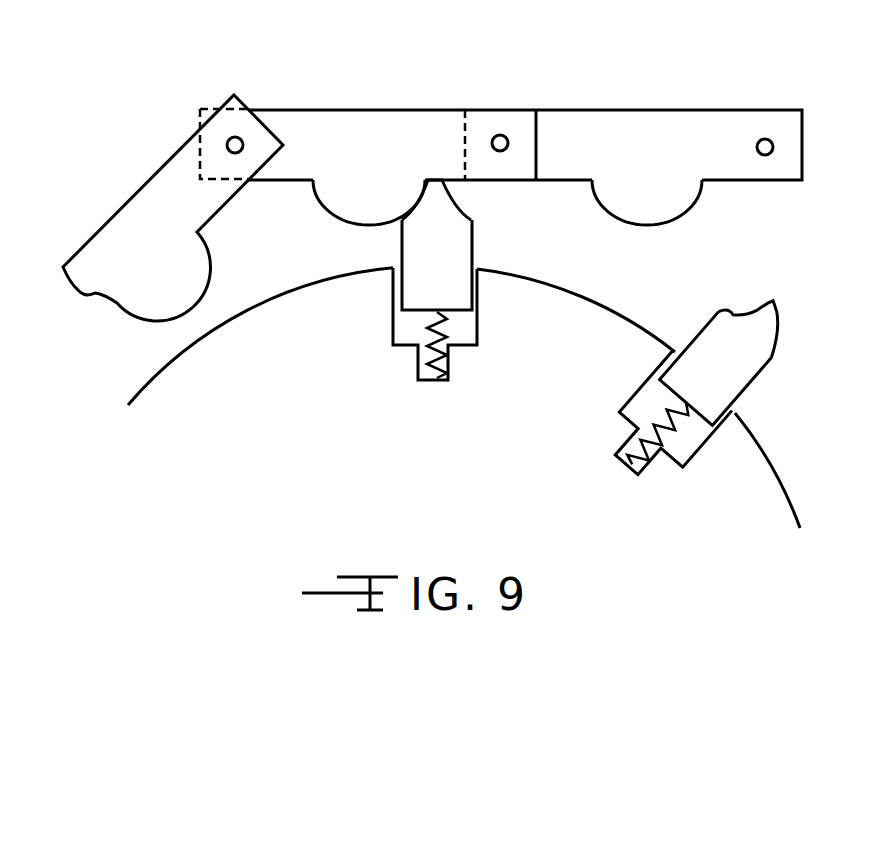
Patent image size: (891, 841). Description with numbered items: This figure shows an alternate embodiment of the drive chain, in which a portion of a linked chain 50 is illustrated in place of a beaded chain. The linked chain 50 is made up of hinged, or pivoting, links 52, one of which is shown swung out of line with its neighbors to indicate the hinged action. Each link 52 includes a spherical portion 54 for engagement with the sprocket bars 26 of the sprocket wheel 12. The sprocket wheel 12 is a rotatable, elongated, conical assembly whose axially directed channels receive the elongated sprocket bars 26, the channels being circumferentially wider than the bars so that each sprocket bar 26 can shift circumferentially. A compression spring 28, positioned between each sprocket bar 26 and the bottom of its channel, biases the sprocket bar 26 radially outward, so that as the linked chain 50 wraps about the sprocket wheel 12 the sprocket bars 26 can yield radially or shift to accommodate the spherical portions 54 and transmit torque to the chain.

The linked chain 50 is at (748, 110).
The pivoting link 52 is at (101, 271).
The spherical portion 54 is at (208, 258).
The conical sprocket wheel assembly 12 is at (448, 210).
The sprocket bar 26 is at (412, 244).
The compression spring 28 is at (430, 328).